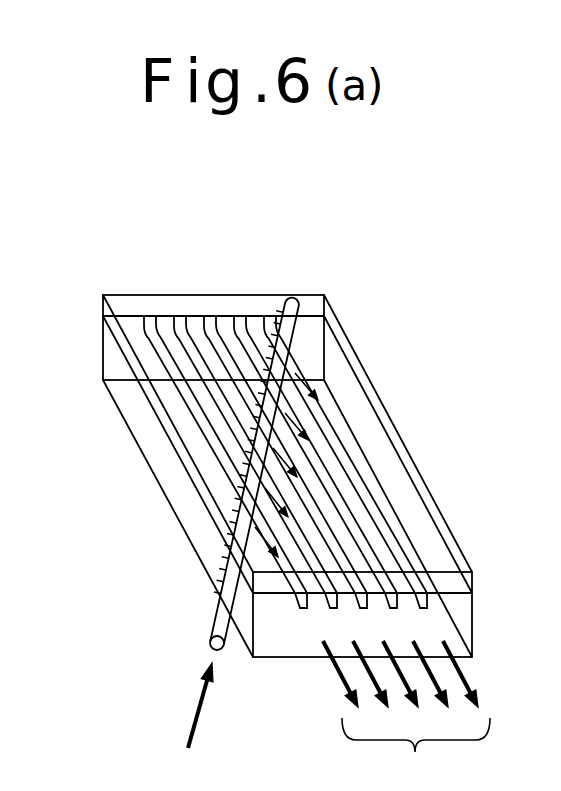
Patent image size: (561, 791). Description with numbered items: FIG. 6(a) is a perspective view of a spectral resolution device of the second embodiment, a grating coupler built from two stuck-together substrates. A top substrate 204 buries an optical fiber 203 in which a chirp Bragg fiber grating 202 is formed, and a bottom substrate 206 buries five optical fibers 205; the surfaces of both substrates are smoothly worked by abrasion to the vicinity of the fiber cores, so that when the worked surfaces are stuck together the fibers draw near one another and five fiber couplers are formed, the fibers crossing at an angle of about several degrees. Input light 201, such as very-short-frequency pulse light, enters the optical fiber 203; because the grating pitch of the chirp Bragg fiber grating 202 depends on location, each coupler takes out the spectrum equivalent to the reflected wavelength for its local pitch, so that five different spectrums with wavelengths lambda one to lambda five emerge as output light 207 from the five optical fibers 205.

The input light 201 is at (171, 705).
The chirp Bragg fiber grating 202 is at (267, 369).
The optical fiber 203 is at (222, 605).
The top substrate 204 is at (333, 328).
The optical fiber 205 is at (272, 325).
The bottom substrate 206 is at (462, 622).
The output light 207 is at (392, 699).